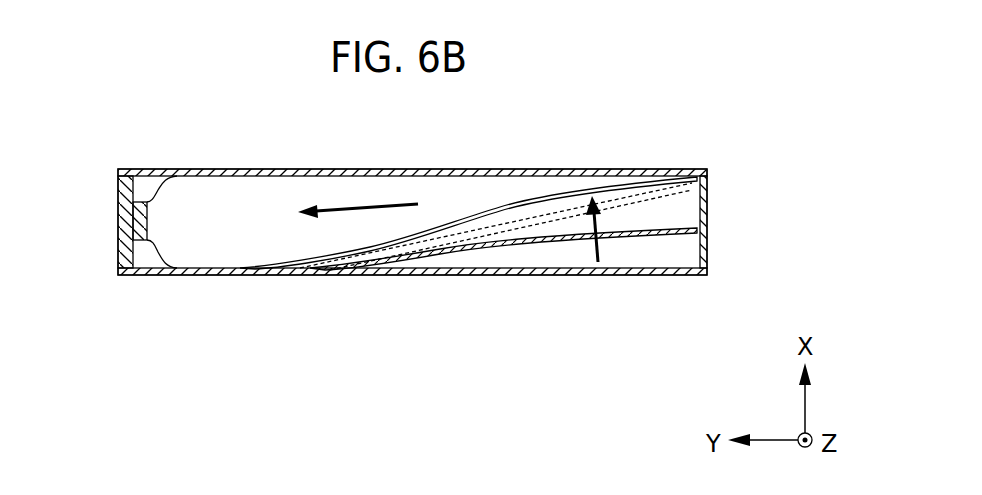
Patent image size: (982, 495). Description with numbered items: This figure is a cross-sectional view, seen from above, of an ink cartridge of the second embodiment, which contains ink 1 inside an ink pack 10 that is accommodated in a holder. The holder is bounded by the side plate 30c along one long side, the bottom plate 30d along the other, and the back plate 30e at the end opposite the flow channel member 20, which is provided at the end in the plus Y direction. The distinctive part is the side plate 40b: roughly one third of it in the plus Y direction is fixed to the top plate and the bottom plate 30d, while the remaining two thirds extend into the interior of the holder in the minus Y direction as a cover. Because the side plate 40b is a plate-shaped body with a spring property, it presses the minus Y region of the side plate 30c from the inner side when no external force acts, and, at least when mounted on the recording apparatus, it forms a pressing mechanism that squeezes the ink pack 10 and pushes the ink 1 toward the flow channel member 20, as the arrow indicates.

The ink 1 is at (252, 236).
The ink pack 10 is at (185, 185).
The flow channel member 20 is at (130, 222).
The side plate 30c is at (445, 168).
The bottom plate 30d is at (465, 262).
The back plate 30e is at (707, 200).
The side plate 40b is at (548, 237).